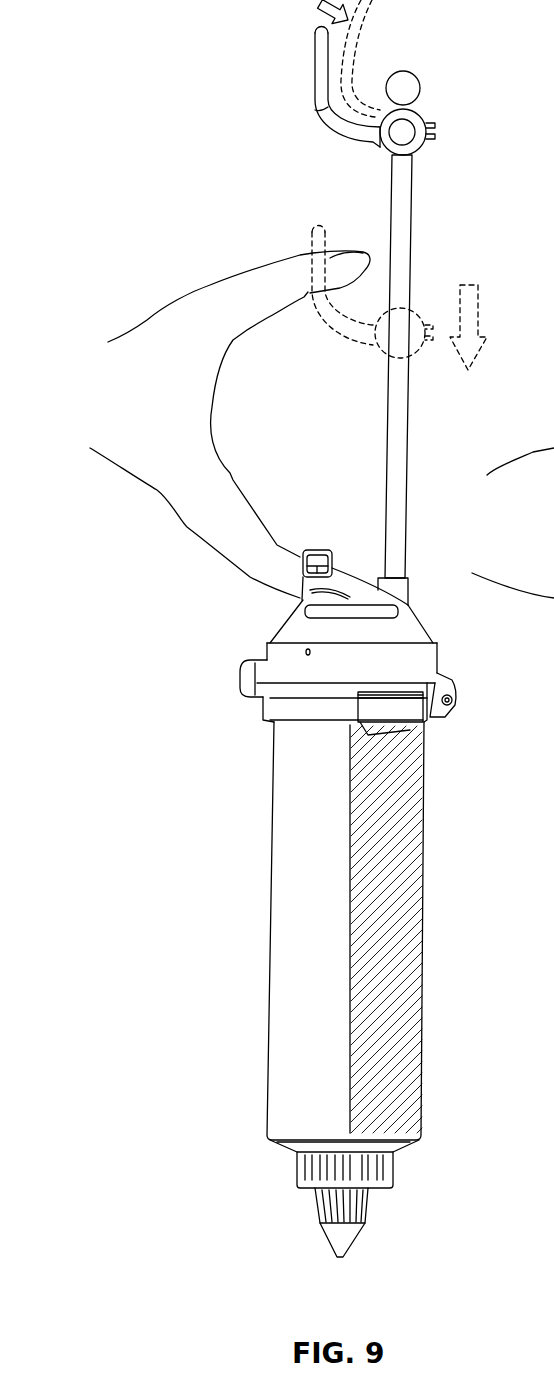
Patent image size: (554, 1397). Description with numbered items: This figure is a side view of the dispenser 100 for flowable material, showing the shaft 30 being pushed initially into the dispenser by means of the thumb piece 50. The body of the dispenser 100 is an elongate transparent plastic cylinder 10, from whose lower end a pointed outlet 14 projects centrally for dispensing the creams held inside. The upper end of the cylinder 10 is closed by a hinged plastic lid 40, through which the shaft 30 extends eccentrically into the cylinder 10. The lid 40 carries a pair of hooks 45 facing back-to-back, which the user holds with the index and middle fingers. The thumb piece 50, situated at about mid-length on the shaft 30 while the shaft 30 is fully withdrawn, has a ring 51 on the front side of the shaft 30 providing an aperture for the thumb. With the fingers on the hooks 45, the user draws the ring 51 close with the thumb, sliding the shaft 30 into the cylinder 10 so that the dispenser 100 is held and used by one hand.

The dispenser 100 is at (223, 832).
The cylinder 10 is at (285, 948).
The pointed outlet 14 is at (327, 1215).
The shaft 30 is at (403, 233).
The lid 40 is at (277, 635).
The hooks 45 is at (312, 555).
The thumb piece 50 is at (447, 103).
The ring 51 is at (318, 47).